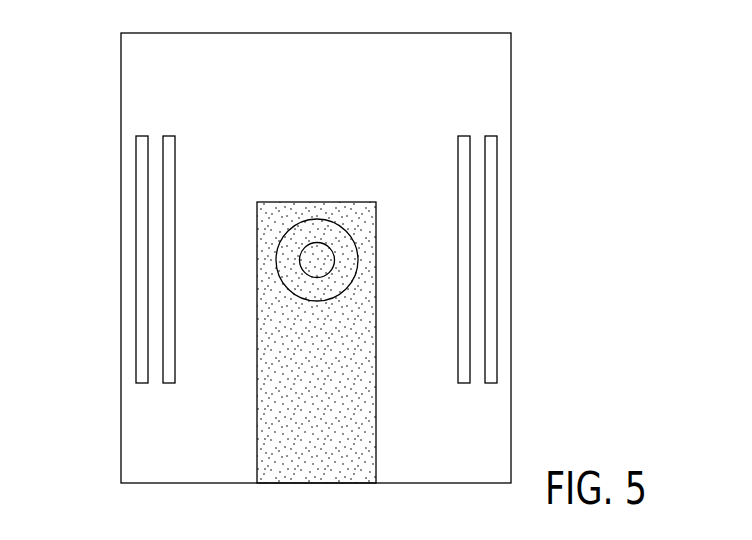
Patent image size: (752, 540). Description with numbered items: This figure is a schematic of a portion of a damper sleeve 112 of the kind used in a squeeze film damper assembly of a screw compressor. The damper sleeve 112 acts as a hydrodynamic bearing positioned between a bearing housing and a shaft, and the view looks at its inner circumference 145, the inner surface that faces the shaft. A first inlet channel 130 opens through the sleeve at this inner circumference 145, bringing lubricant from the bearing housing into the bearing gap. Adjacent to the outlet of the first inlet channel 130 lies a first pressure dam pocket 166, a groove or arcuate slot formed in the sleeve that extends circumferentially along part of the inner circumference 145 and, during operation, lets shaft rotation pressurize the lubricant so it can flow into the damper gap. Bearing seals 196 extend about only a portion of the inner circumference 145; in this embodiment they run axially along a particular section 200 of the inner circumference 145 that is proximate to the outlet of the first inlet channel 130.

The damper sleeve 112 is at (493, 427).
The inner circumference 145 is at (356, 109).
The bearing seals 196 is at (168, 136).
The first pressure dam pocket 166 is at (277, 430).
The first inlet channel 130 is at (329, 245).
The section 200 is at (86, 137).